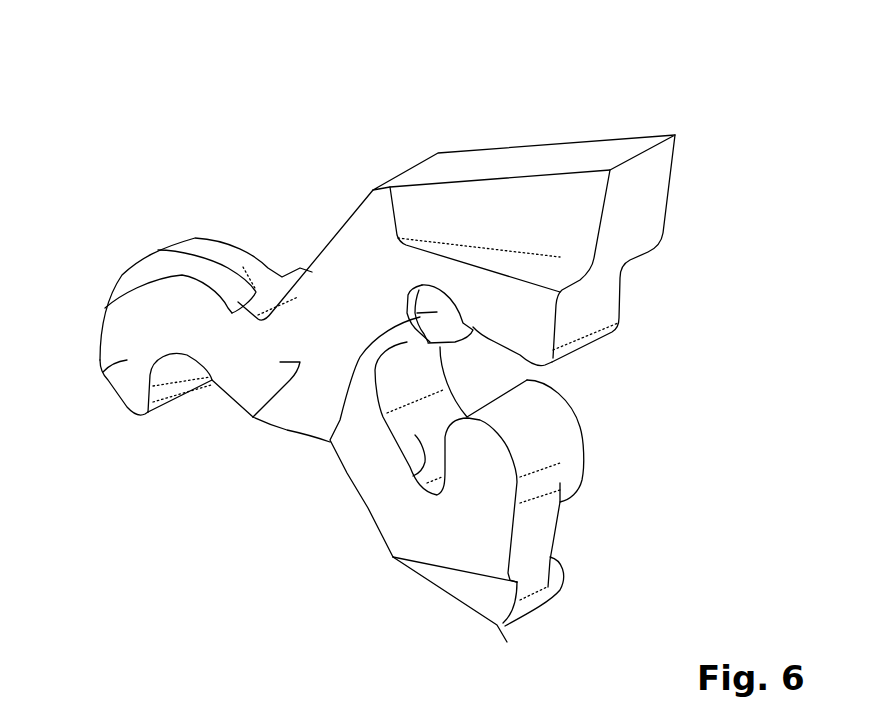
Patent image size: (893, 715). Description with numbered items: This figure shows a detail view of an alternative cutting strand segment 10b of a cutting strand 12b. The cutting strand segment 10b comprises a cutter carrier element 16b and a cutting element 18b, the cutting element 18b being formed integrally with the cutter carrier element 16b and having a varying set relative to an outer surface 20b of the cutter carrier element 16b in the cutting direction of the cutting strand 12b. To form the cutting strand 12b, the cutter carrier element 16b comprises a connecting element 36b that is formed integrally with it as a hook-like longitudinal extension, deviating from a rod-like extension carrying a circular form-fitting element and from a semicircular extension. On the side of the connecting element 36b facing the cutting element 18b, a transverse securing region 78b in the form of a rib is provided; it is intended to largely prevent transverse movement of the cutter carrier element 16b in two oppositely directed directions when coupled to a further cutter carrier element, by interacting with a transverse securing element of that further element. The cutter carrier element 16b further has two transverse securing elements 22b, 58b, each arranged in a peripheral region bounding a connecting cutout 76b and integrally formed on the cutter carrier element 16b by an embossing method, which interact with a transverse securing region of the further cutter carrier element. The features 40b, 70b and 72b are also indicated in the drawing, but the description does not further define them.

The cutting strand segment 10b is at (678, 80).
The cutting strand 12b is at (132, 82).
The cutter carrier element 16b is at (342, 277).
The cutting element 18b is at (638, 188).
The outer surface 20b is at (253, 418).
The transverse securing element 22b is at (330, 447).
The connecting element 36b is at (103, 373).
The latching foot 40b is at (558, 558).
The transverse securing element 58b is at (480, 333).
The support edge 70b is at (493, 627).
The guide edge 72b is at (345, 480).
The connecting cutout 76b is at (420, 470).
The transverse securing region 78b is at (177, 262).